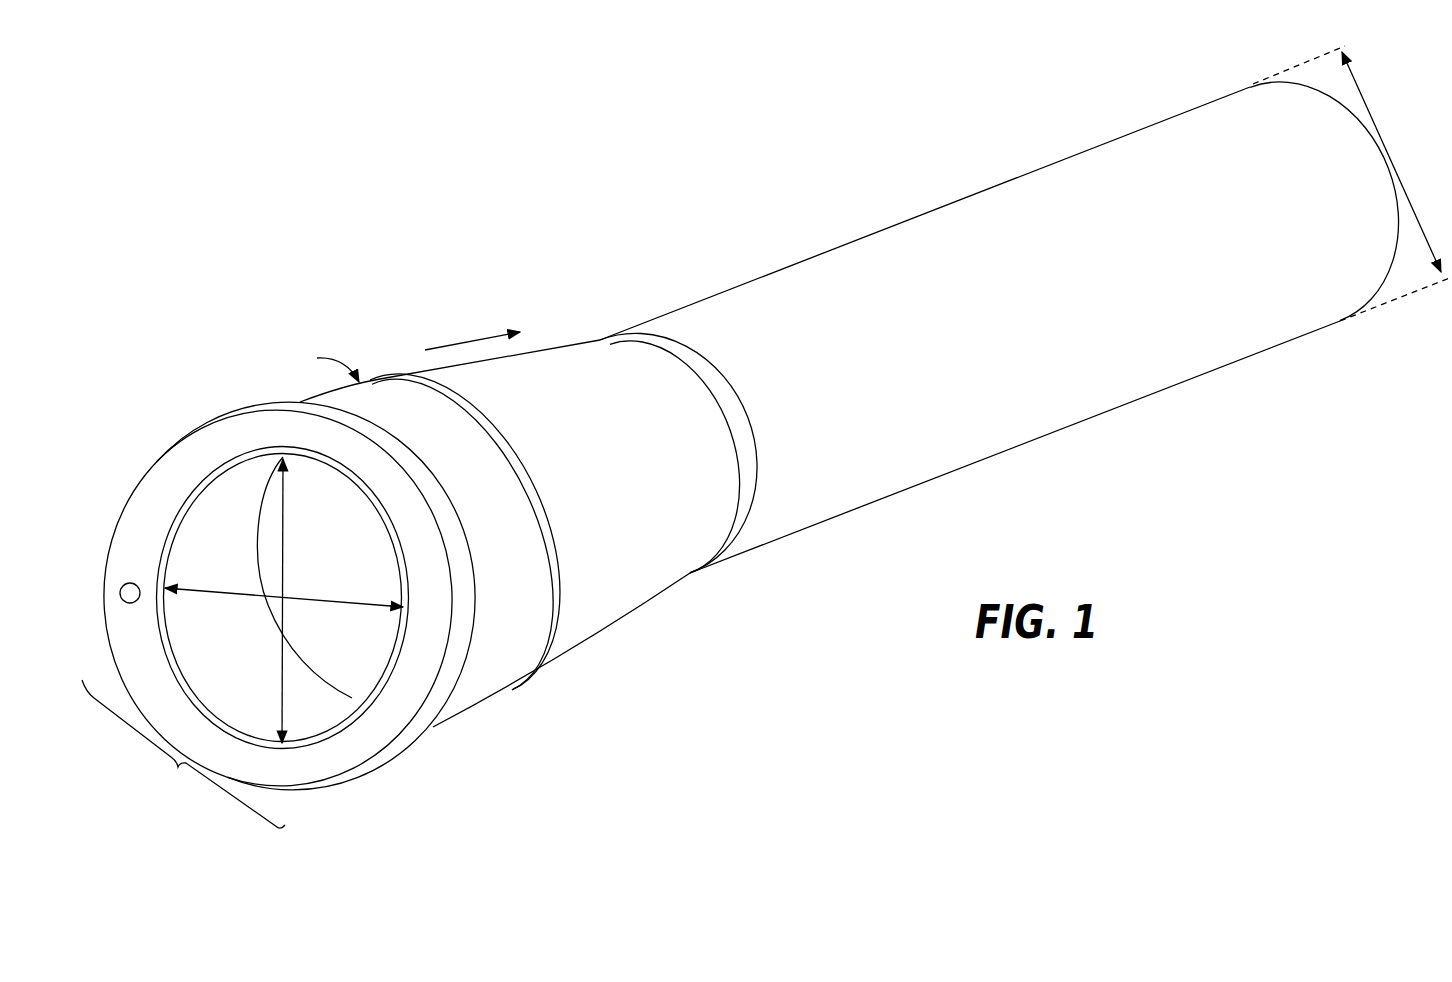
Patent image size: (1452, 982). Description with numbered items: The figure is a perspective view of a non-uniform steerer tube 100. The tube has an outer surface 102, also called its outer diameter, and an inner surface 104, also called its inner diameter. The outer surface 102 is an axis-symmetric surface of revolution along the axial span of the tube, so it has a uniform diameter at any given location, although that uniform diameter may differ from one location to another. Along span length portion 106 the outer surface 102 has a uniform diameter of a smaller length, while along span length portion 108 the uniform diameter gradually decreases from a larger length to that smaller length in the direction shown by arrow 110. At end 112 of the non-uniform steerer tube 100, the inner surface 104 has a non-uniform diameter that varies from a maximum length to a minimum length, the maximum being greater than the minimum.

The non-uniform steerer tube 100 is at (367, 139).
The outer surface 102 is at (323, 791).
The inner surface 104 is at (191, 507).
The span length portion 106 is at (1342, 331).
The span length portion 108 is at (688, 583).
The arrow 110 is at (465, 342).
The end 112 is at (183, 754).